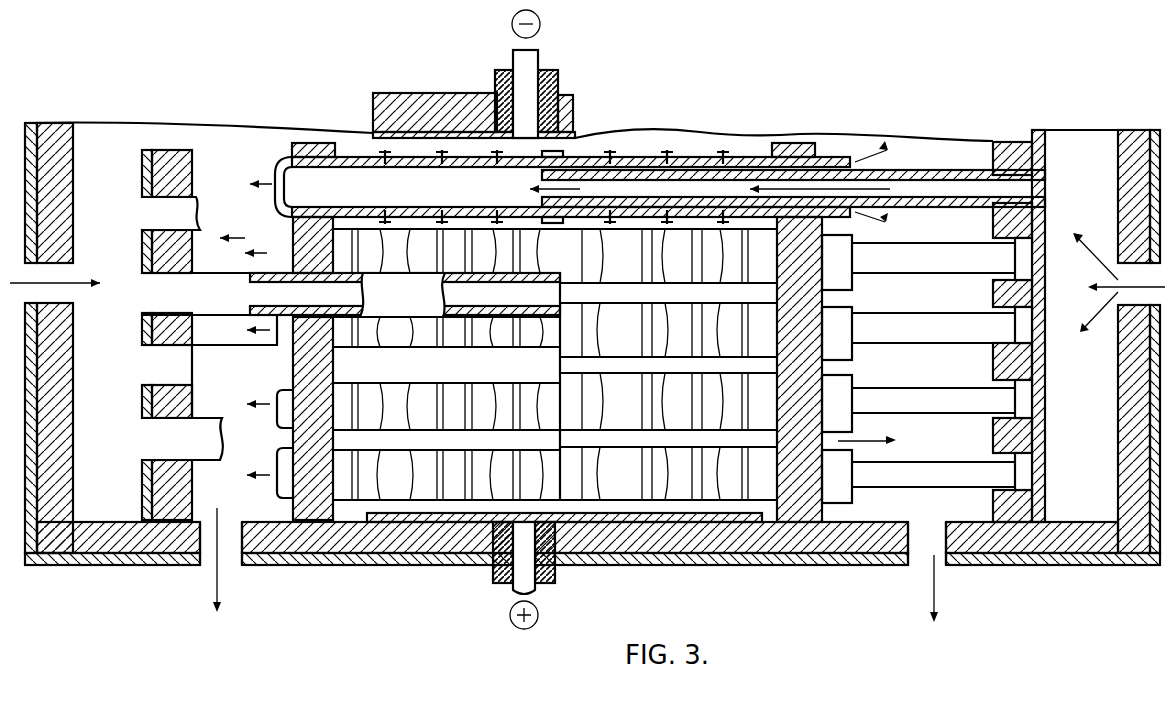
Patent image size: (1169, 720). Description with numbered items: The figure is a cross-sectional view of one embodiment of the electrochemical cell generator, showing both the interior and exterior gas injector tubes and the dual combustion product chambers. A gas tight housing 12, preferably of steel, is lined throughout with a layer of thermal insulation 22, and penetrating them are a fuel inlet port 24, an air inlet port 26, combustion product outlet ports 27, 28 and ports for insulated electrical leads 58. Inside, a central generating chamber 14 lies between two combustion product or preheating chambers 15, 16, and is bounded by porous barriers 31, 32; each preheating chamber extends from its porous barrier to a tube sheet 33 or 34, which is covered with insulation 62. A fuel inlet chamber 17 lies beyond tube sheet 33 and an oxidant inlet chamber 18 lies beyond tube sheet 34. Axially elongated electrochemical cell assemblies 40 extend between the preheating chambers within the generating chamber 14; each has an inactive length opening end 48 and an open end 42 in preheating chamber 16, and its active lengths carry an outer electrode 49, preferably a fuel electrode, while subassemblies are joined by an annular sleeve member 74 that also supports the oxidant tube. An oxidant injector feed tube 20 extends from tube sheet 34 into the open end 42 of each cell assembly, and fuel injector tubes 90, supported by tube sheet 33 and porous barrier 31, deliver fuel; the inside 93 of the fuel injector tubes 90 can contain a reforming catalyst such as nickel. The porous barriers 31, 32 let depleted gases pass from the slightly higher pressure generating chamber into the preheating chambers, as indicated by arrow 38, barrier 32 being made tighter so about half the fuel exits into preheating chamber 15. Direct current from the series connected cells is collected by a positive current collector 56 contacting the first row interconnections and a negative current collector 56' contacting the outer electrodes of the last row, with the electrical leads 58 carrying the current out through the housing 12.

The housing 12 is at (31, 124).
The thermal insulation 22 is at (60, 135).
The fuel inlet port 24 is at (68, 272).
The air inlet port 26 is at (1116, 282).
The combustion product outlet port 27 is at (202, 566).
The combustion product outlet port 28 is at (940, 554).
The tube sheet 33 is at (143, 159).
The insulation 62 is at (176, 179).
The fuel inlet chamber 17 is at (102, 468).
The preheating chamber 15 is at (280, 368).
The preheating chamber 16 is at (880, 505).
The oxidant inlet chamber 18 is at (1082, 480).
The inactive length opening end 48 is at (835, 487).
The tube sheet 34 is at (1033, 135).
The porous barrier 31 is at (307, 143).
The porous barrier 32 is at (785, 142).
The outer electrode 49 is at (278, 188).
The central generating chamber 14 is at (787, 170).
The annular sleeve member 74 is at (574, 148).
The negative current collector 56' is at (445, 114).
The electrical leads 58 is at (532, 66).
The positive current collector 56 is at (565, 558).
The fuel injector tube 90 is at (230, 307).
The inside of fuel injector tube 93 is at (535, 275).
The electrochemical cell assembly 40 is at (612, 408).
The open end 42 is at (854, 279).
The oxidant injector feed tube 20 is at (923, 261).
The arrow 38 is at (866, 438).